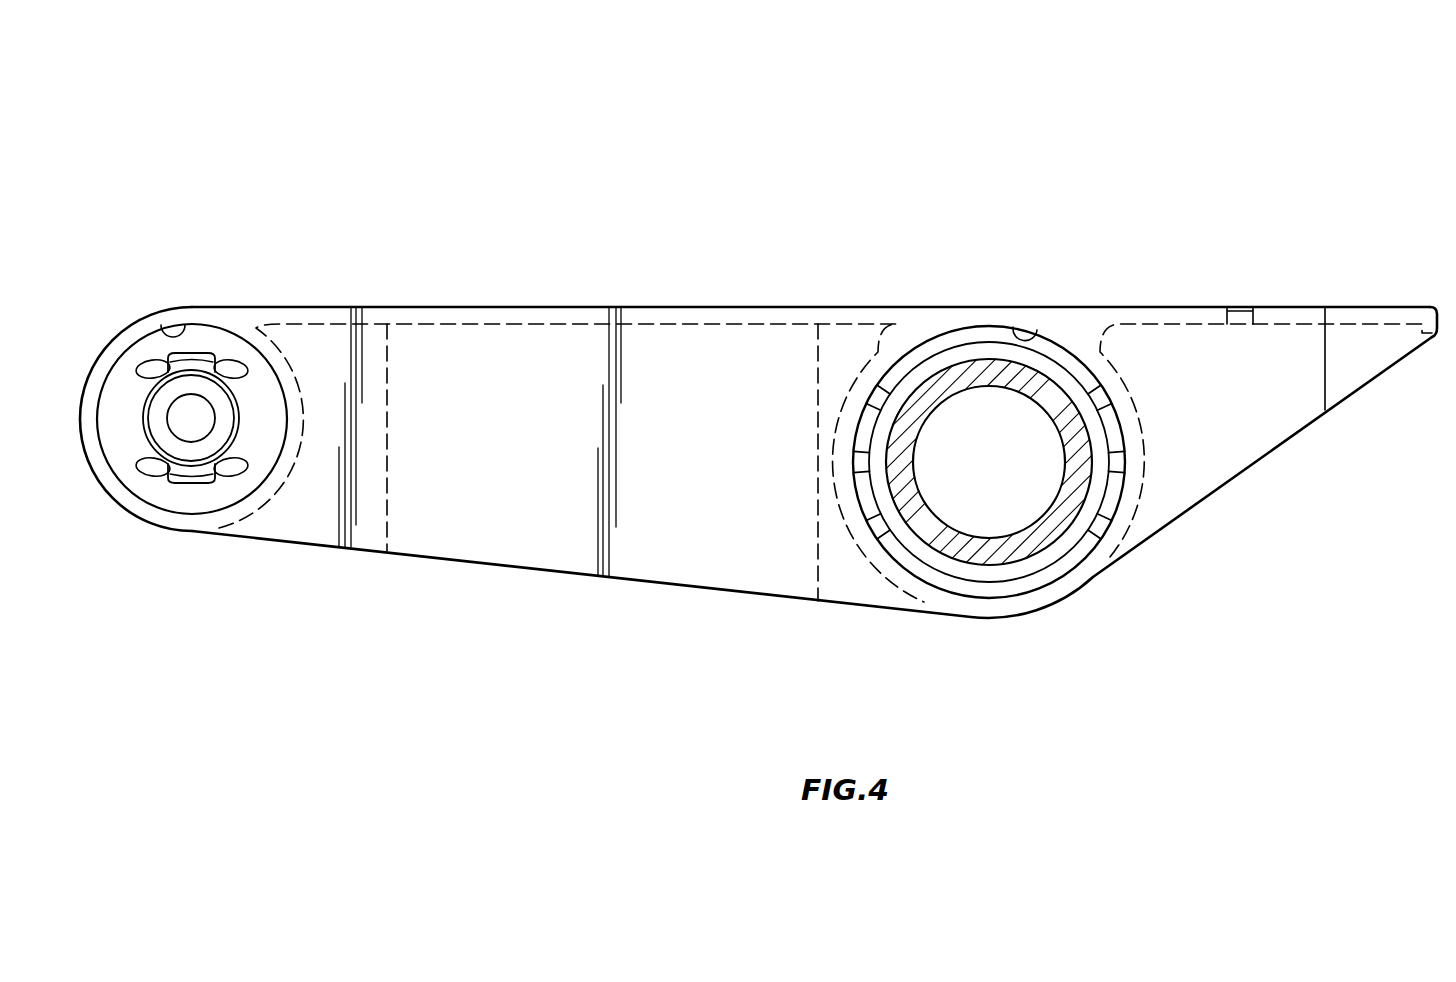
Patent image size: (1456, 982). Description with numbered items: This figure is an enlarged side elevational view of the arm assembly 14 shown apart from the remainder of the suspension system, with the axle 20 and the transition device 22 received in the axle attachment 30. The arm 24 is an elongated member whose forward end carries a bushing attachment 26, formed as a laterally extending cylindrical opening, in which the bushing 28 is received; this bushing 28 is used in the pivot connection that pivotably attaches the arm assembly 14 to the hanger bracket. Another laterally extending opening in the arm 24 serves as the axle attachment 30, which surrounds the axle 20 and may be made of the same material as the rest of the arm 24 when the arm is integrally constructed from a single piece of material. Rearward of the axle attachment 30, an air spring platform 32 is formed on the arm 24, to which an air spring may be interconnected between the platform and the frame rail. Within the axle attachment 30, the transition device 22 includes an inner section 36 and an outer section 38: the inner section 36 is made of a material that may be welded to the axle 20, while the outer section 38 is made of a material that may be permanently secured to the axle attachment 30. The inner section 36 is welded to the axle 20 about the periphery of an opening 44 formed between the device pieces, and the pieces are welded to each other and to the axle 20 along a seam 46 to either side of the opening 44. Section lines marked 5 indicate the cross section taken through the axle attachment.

The arm assembly 14 is at (1272, 147).
The axle 20 is at (1050, 550).
The transition device 22 is at (939, 603).
The arm 24 is at (486, 306).
The bushing attachment 26 is at (178, 338).
The bushing 28 is at (193, 517).
The axle attachment 30 is at (1037, 337).
The air spring platform 32 is at (1277, 306).
The inner section 36 is at (972, 347).
The outer section 38 is at (923, 338).
The opening 44 is at (1087, 413).
The seam 46 is at (1112, 462).
The section line 5- 5 is at (990, 283).